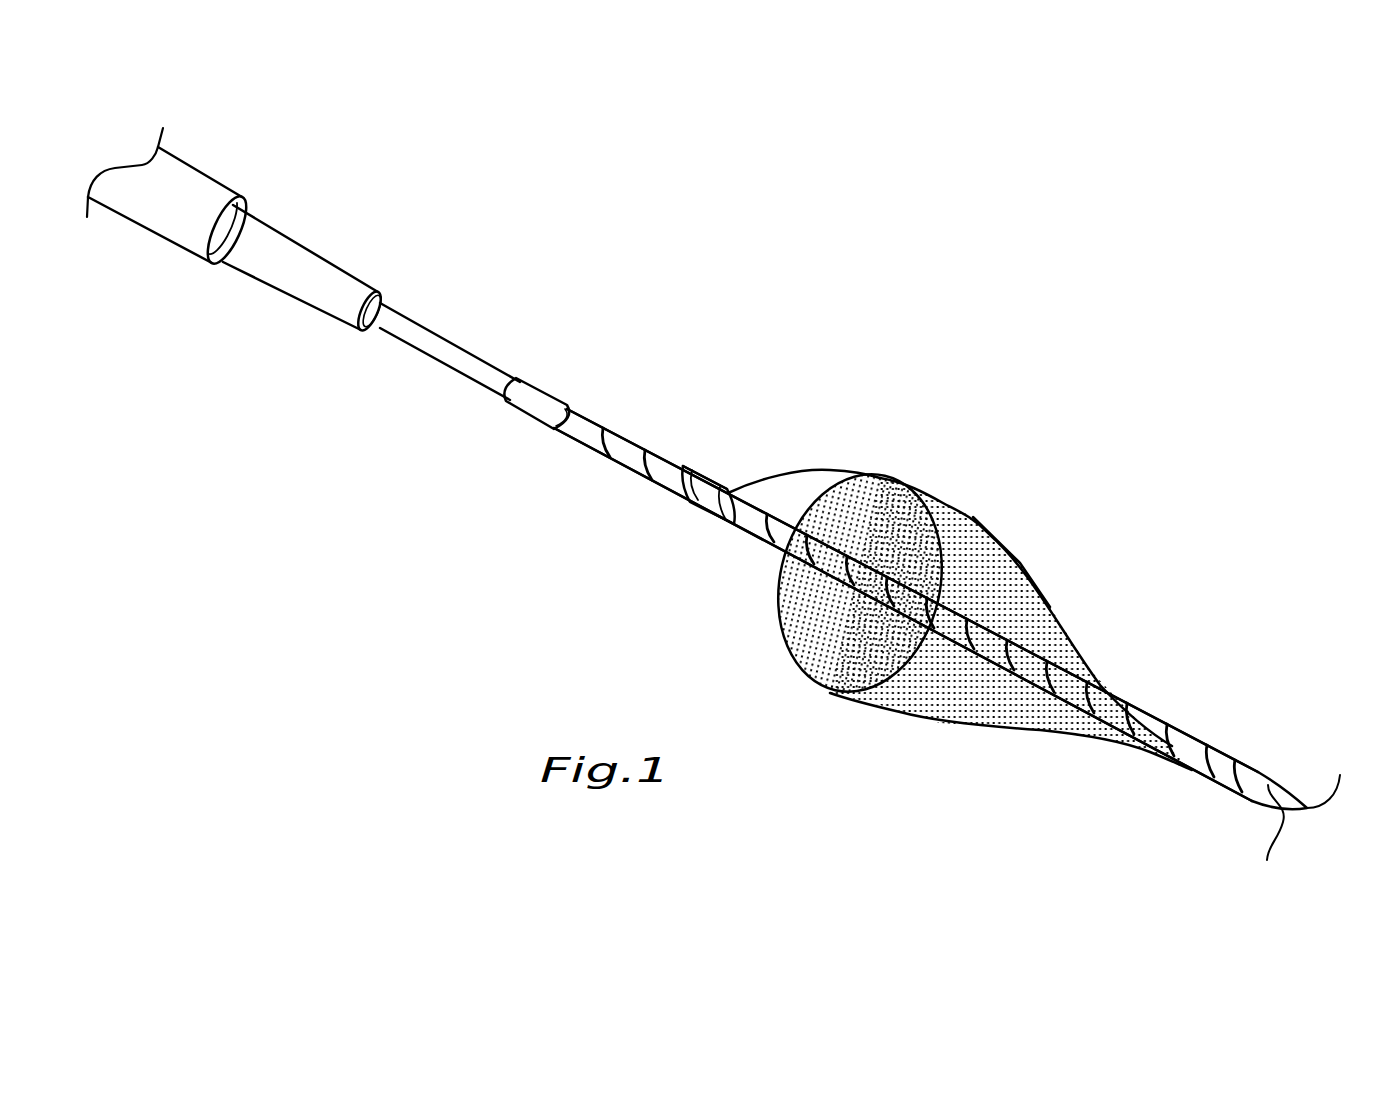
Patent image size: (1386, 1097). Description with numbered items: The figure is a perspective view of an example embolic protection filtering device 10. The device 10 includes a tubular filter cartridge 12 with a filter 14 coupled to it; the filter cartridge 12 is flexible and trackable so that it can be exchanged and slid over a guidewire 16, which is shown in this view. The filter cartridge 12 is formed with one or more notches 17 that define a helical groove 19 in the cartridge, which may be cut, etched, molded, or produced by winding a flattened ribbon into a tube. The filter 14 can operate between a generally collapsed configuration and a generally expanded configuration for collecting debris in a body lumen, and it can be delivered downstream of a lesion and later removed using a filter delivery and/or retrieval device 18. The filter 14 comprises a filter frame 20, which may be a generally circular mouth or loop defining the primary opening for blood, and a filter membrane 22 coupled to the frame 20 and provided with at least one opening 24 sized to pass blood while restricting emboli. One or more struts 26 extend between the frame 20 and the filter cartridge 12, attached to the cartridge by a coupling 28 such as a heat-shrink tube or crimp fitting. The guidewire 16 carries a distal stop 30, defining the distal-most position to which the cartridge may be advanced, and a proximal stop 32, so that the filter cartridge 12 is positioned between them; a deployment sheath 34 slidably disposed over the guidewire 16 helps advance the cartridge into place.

The embolic protection filtering device 10 is at (625, 200).
The tubular filter cartridge 12 is at (757, 540).
The filter 14 is at (972, 514).
The guidewire 16 is at (447, 338).
The notches 17 is at (650, 442).
The filter delivery and/or retrieval device 18 is at (200, 168).
The helical groove 19 is at (683, 473).
The filter frame 20 is at (881, 478).
The filter membrane 22 is at (996, 570).
The opening 24 is at (1040, 627).
The struts 26 is at (835, 472).
The coupling 28 is at (697, 510).
The distal stop 30 is at (1268, 785).
The proximal stop 32 is at (548, 388).
The deployment sheath 34 is at (304, 244).